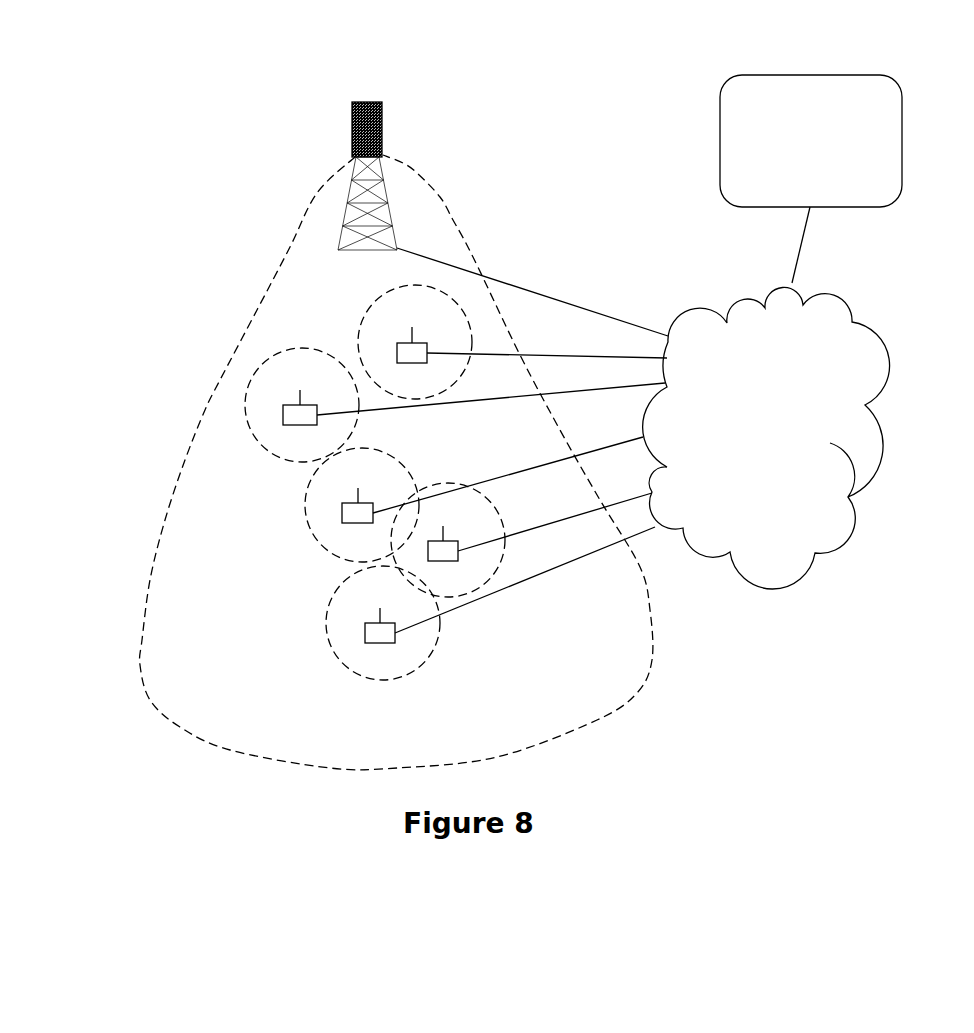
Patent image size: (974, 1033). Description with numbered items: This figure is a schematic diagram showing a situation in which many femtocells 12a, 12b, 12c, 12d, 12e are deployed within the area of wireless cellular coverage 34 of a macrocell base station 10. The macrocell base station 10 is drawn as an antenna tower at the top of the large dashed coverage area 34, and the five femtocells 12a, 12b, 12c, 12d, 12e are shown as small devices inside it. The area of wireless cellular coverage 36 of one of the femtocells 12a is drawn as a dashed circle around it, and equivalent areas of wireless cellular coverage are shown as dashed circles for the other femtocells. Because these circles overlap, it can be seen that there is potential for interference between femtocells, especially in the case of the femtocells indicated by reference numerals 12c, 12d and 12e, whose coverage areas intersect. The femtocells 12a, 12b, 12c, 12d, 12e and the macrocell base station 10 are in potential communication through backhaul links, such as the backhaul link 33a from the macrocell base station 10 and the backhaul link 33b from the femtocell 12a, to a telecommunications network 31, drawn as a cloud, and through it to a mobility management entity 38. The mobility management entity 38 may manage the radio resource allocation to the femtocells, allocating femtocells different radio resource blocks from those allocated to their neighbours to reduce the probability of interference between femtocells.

The macrocell base station 10 is at (387, 98).
The femtocell 12a is at (400, 341).
The femtocell 12b is at (277, 407).
The femtocell 12c is at (342, 512).
The femtocell 12d is at (363, 628).
The femtocell 12e is at (455, 530).
The telecommunications network 31 is at (845, 290).
The backhaul link 33a is at (548, 293).
The backhaul link 33b is at (513, 355).
The area of wireless cellular coverage 34 is at (290, 247).
The area of wireless cellular coverage 36 is at (378, 298).
The mobility management entity 38 is at (717, 155).